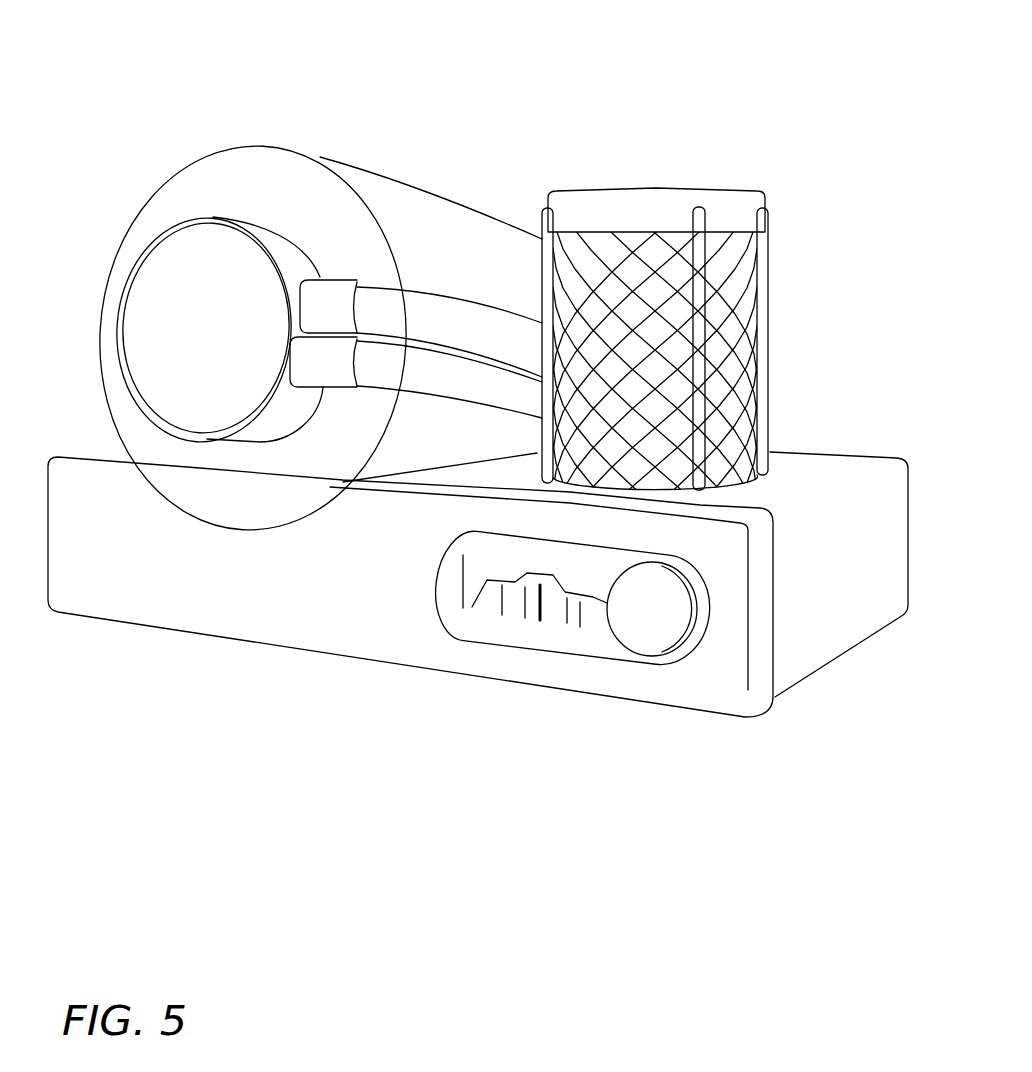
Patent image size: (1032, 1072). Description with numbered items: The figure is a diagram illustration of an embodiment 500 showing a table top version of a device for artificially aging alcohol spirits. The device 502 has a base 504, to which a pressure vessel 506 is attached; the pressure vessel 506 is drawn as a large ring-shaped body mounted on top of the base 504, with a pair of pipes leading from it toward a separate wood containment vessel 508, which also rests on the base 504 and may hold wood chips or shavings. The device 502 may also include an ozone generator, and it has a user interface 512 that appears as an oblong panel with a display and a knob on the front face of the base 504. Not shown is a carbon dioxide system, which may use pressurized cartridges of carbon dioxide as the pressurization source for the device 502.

The embodiment 500 is at (110, 783).
The device 502 is at (150, 627).
The base 504 is at (325, 652).
The pressure vessel 506 is at (303, 147).
The wood containment vessel 508 is at (673, 186).
The user interface 512 is at (542, 650).